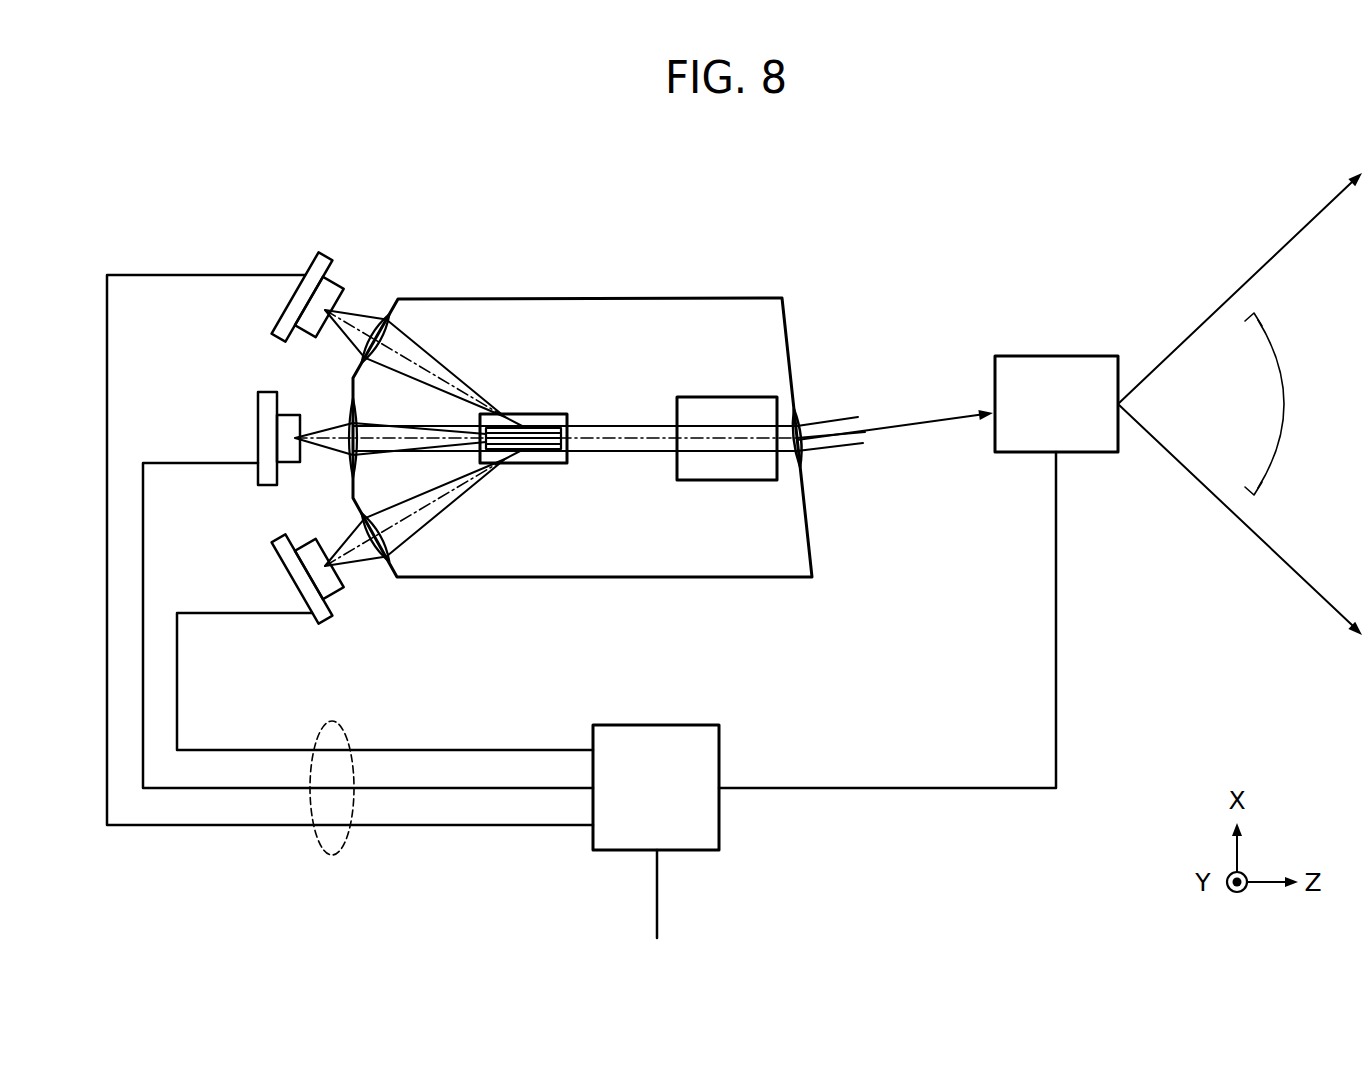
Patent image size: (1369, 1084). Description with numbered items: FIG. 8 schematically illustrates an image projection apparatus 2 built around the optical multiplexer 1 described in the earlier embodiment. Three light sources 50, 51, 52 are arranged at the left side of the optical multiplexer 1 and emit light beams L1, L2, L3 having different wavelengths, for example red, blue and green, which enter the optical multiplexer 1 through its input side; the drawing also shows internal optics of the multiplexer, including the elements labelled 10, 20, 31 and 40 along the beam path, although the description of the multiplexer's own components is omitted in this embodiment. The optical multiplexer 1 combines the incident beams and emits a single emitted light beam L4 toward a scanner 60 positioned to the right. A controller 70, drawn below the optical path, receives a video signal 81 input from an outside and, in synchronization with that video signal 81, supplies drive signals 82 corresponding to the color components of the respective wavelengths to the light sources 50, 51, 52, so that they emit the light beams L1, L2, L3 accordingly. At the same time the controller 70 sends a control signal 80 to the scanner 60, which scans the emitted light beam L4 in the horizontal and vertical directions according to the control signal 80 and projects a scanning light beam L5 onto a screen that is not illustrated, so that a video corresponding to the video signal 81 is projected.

The optical multiplexer 1 is at (588, 298).
The image projection apparatus 2 is at (946, 249).
The collimating lenses 10 is at (390, 300).
The light combining element 20 is at (543, 465).
The projection lens 31 is at (800, 458).
The optical element 40 is at (720, 482).
The light source 50 is at (258, 410).
The light source 51 is at (303, 262).
The light source 52 is at (272, 556).
The scanner 60 is at (1050, 356).
The controller 70 is at (719, 810).
The control signal 80 is at (970, 790).
The video signal 81 is at (657, 890).
The drive signals 82 is at (353, 827).
The light beam L1 is at (330, 432).
The light beam L2 is at (418, 355).
The light beam L3 is at (402, 525).
The emitted light beam L4 is at (913, 423).
The scanning light beam L5 is at (1268, 258).